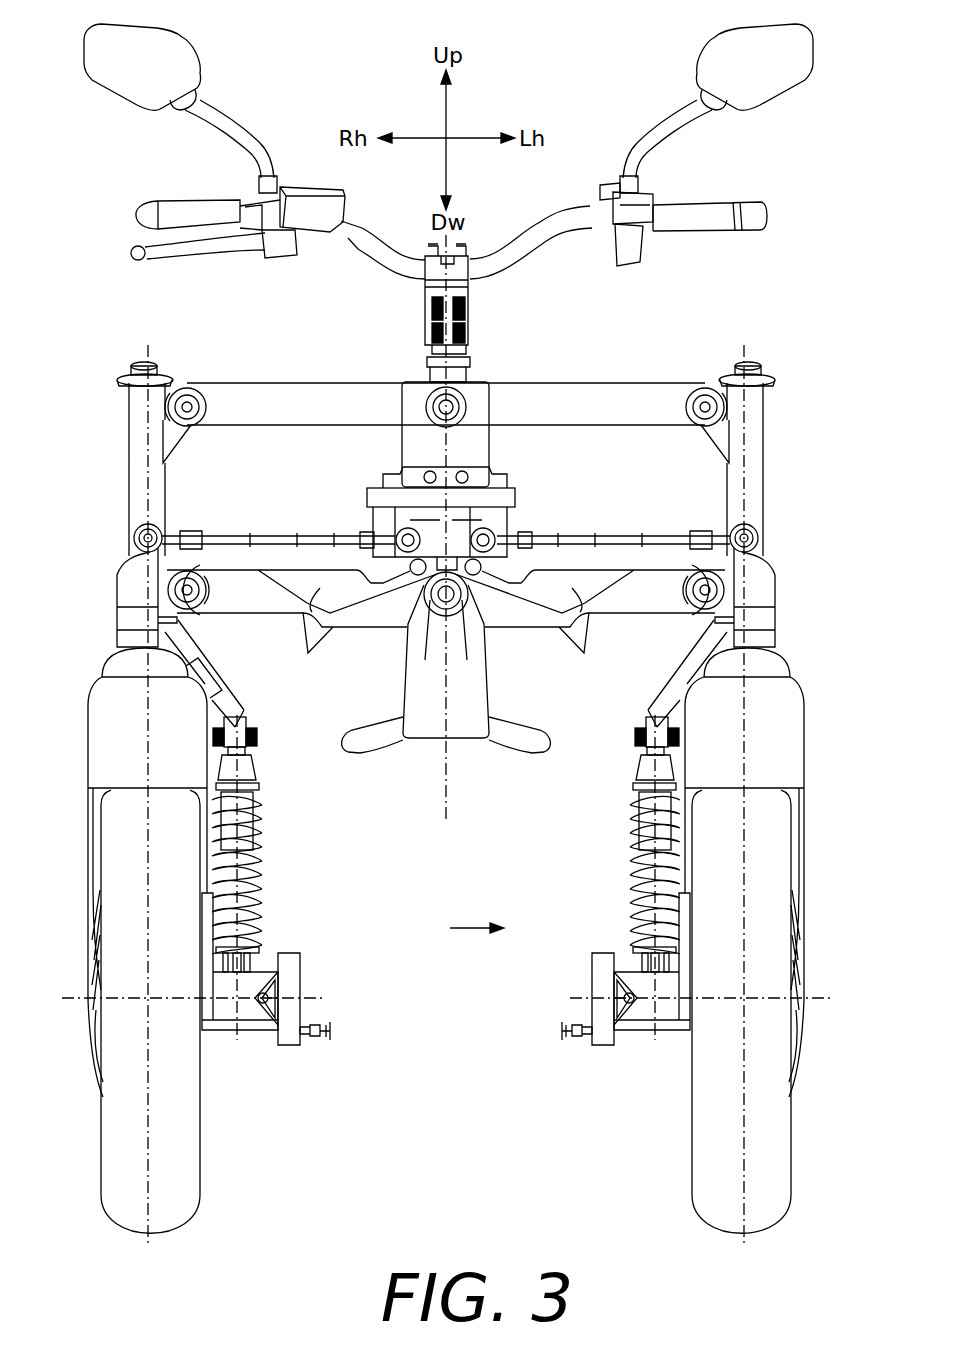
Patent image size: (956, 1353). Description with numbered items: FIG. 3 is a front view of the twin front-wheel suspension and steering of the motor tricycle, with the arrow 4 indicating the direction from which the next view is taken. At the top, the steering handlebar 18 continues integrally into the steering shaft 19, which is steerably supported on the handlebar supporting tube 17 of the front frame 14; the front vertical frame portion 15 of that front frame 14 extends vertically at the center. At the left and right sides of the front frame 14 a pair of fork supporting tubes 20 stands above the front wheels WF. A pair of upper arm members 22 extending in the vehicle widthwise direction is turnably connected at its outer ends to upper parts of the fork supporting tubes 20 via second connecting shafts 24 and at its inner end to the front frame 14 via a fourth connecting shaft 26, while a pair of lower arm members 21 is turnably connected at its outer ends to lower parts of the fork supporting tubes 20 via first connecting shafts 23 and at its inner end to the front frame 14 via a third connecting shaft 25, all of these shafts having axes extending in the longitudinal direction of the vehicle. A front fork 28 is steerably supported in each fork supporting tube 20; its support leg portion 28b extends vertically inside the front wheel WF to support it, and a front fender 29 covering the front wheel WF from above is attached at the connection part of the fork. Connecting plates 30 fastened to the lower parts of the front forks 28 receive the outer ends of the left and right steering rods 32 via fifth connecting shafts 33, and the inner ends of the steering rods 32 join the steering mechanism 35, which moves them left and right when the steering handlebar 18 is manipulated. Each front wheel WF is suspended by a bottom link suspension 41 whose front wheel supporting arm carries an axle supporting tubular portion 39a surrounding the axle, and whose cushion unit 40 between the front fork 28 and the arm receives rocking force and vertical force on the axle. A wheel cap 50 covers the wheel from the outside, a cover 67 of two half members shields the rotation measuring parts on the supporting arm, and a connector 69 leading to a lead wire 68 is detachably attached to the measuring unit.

The arrow 4 is at (477, 907).
The front frame 14 is at (496, 451).
The front vertical frame portion 15 is at (402, 455).
The handlebar supporting tube 17 is at (462, 373).
The steering handlebar 18 is at (550, 232).
The steering shaft 19 is at (432, 350).
The fork supporting tube 20 is at (133, 458).
The lower arm member 21 is at (314, 625).
The upper arm member 22 is at (277, 398).
The first connecting shaft 23 is at (201, 605).
The second connecting shaft 24 is at (190, 390).
The third connecting shaft 25 is at (436, 620).
The fourth connecting shaft 26 is at (426, 405).
The front fork 28 is at (248, 688).
The support leg portion 28b is at (208, 684).
The front fender 29 is at (98, 705).
The connecting plate 30 is at (130, 586).
The steering rod 32 is at (272, 538).
The fifth connecting shaft 33 is at (135, 533).
The steering mechanism 35 is at (515, 497).
The axle supporting tubular portion 39a is at (247, 1020).
The cushion unit 40 is at (245, 872).
The bottom link suspension 41 is at (266, 903).
The wheel cap 50 is at (96, 1097).
The cover 67 is at (287, 1040).
The lead wire 68 is at (303, 1028).
The connector 69 is at (305, 1038).
The front wheel WF is at (203, 1141).